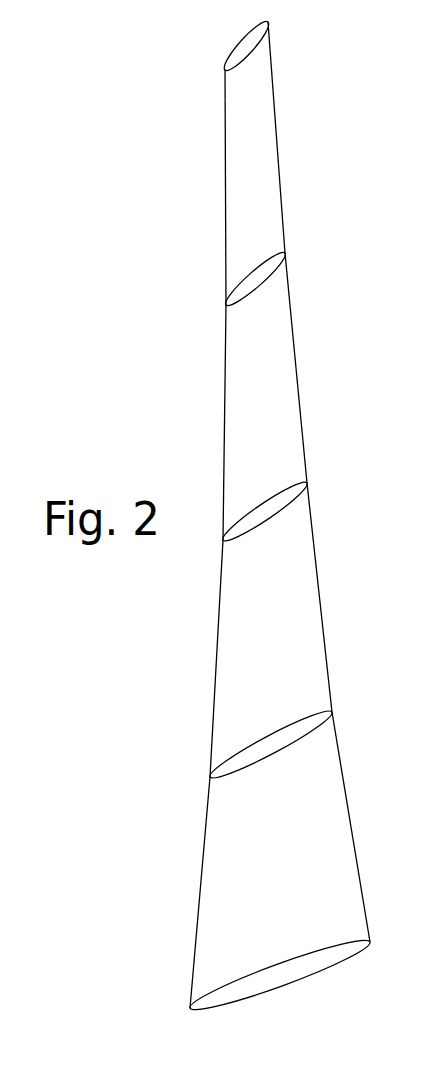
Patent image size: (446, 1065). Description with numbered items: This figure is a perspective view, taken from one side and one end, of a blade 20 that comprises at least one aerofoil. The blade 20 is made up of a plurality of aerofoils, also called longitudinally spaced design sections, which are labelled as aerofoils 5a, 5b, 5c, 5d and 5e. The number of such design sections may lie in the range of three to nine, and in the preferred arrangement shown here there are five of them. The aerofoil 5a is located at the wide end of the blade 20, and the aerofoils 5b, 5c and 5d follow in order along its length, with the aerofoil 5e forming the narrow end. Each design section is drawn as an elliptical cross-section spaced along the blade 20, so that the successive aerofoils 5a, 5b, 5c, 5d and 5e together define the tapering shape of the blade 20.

The blade 20 is at (318, 389).
The aerofoil 5a is at (279, 978).
The aerofoil 5b is at (280, 856).
The aerofoil 5c is at (271, 626).
The aerofoil 5d is at (264, 393).
The aerofoil 5e is at (252, 161).